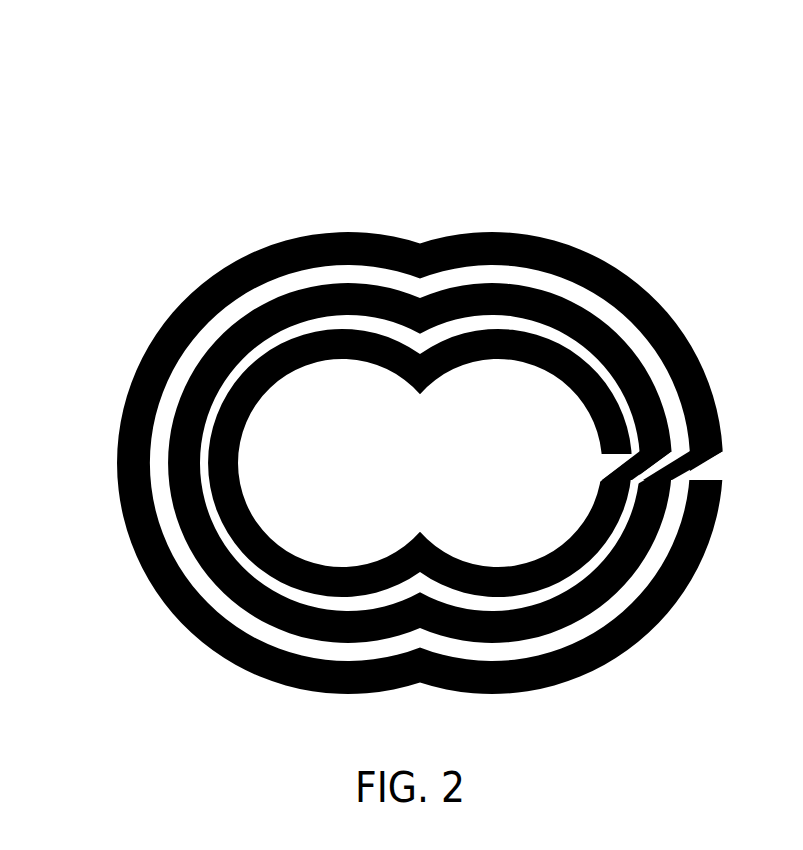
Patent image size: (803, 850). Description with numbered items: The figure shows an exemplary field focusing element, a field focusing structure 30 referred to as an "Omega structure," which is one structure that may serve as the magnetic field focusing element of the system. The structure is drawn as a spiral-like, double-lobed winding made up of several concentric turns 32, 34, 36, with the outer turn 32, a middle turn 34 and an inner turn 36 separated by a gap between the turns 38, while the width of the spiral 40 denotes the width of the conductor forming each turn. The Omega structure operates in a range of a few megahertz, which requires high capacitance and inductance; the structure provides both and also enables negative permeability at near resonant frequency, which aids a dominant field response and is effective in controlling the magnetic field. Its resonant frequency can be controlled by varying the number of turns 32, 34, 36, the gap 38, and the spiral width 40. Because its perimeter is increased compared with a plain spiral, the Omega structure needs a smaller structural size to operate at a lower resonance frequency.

The field focusing structure 30 is at (388, 359).
The turn 32 is at (339, 228).
The turn 34 is at (290, 285).
The turn 36 is at (253, 402).
The gap between the turns 38 is at (628, 525).
The width of the spiral 40 is at (648, 446).